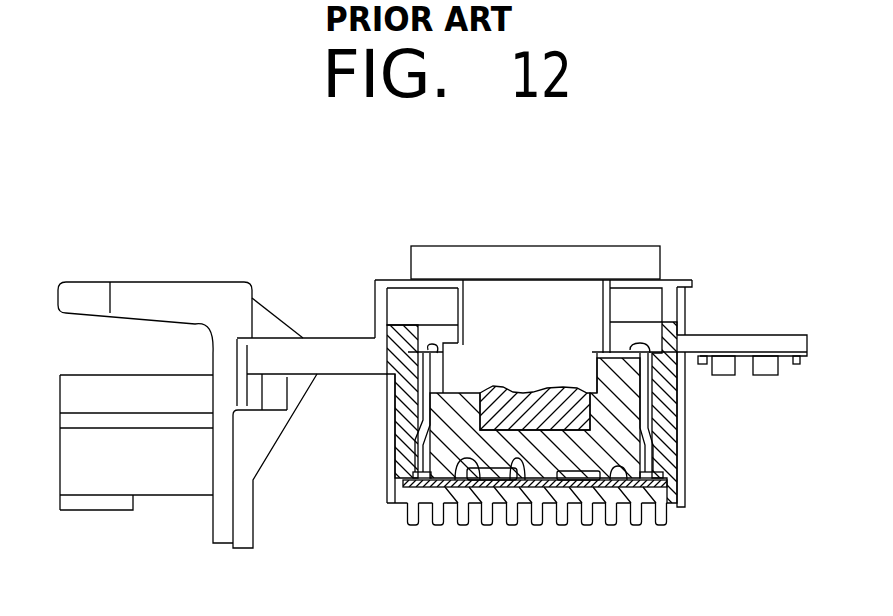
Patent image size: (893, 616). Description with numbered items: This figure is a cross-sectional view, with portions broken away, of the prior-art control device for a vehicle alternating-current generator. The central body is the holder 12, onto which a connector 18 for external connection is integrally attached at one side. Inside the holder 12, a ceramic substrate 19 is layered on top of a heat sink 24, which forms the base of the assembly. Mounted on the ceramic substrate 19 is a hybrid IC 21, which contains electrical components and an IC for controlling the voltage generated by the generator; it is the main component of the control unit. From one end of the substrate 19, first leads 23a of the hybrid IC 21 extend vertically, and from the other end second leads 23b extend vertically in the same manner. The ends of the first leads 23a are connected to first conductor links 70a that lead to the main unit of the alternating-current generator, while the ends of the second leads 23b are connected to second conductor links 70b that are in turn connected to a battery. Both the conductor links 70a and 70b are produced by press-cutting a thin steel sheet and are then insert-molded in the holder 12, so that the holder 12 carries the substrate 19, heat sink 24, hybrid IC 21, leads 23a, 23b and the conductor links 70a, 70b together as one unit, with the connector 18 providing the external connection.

The connector 18 is at (142, 302).
The holder 12 is at (683, 405).
The first conductor links 70a is at (672, 352).
The second conductor links 70b is at (424, 342).
The first leads 23a is at (676, 460).
The second leads 23b is at (395, 463).
The hybrid IC 21 is at (475, 487).
The heat sink 24 is at (517, 487).
The ceramic substrate 19 is at (622, 482).